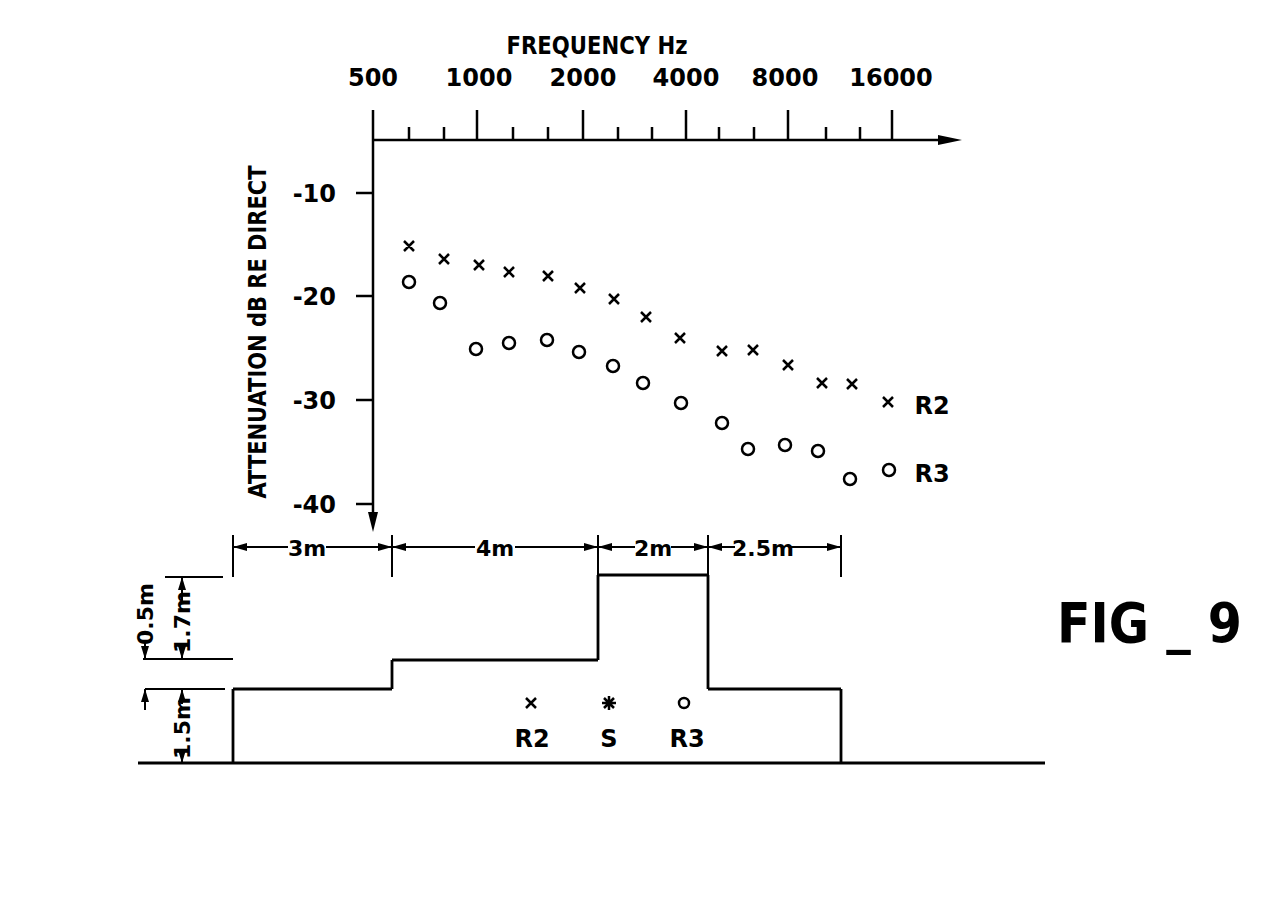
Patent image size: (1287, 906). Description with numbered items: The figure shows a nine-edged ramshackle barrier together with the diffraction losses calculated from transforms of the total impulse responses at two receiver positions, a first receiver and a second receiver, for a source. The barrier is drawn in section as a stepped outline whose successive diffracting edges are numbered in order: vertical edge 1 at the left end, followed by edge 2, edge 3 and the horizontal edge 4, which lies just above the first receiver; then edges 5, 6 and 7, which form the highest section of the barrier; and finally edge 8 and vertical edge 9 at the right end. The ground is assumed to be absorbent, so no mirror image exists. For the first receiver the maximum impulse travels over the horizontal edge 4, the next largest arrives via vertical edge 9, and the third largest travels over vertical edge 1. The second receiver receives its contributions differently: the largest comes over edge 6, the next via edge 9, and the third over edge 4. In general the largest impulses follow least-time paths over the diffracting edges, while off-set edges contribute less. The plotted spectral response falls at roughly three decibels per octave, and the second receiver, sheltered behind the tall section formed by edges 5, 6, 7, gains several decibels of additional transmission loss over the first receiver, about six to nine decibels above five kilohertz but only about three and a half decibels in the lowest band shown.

The vertical edge 1 is at (241, 726).
The edge 2 is at (312, 703).
The edge 3 is at (401, 675).
The horizontal edge 4 is at (495, 676).
The edge 5 is at (609, 617).
The edge 6 is at (653, 591).
The edge 7 is at (697, 632).
The edge 8 is at (774, 703).
The vertical edge 9 is at (830, 726).